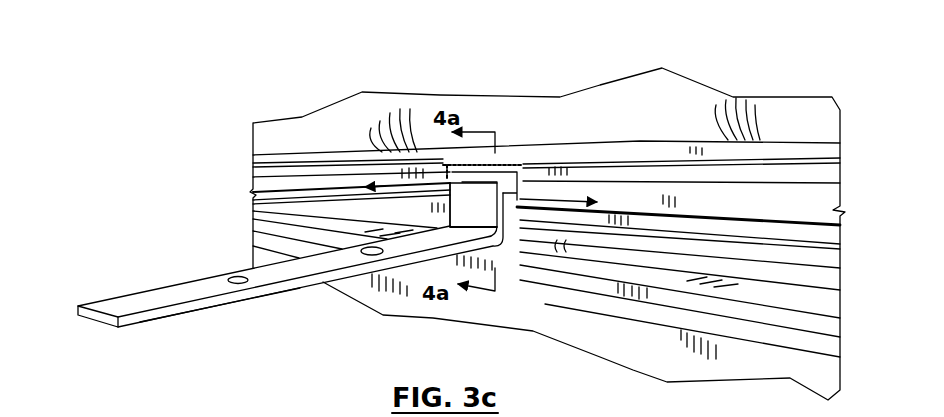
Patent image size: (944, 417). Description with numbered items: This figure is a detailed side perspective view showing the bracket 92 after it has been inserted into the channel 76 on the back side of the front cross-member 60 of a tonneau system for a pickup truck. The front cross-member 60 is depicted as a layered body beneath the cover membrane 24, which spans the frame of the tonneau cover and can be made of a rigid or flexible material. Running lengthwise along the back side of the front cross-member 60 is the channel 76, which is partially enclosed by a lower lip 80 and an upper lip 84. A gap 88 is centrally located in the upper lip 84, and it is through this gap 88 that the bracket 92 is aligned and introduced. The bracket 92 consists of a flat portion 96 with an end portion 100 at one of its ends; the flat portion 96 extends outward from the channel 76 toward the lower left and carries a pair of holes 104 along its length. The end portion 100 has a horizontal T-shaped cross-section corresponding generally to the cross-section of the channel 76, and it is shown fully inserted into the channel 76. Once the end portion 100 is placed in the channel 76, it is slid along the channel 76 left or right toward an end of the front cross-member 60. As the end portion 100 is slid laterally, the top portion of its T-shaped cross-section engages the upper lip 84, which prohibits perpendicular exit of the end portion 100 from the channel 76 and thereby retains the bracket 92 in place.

The cover membrane 24 is at (547, 234).
The upper lip 84 is at (833, 175).
The channel 76 is at (827, 202).
The lower lip 80 is at (830, 233).
The front cross-member 60 is at (846, 236).
The end portion 100 is at (449, 191).
The gap 88 is at (522, 170).
The bracket 92 is at (120, 290).
The holes 104 is at (240, 277).
The flat portion 96 is at (195, 312).